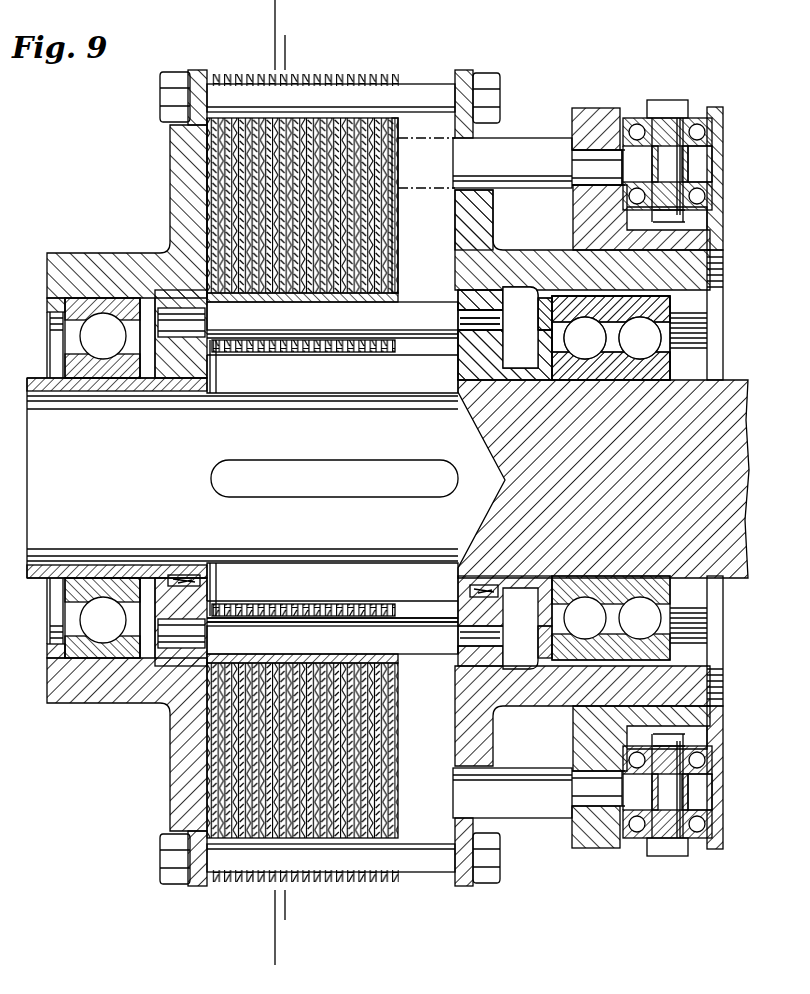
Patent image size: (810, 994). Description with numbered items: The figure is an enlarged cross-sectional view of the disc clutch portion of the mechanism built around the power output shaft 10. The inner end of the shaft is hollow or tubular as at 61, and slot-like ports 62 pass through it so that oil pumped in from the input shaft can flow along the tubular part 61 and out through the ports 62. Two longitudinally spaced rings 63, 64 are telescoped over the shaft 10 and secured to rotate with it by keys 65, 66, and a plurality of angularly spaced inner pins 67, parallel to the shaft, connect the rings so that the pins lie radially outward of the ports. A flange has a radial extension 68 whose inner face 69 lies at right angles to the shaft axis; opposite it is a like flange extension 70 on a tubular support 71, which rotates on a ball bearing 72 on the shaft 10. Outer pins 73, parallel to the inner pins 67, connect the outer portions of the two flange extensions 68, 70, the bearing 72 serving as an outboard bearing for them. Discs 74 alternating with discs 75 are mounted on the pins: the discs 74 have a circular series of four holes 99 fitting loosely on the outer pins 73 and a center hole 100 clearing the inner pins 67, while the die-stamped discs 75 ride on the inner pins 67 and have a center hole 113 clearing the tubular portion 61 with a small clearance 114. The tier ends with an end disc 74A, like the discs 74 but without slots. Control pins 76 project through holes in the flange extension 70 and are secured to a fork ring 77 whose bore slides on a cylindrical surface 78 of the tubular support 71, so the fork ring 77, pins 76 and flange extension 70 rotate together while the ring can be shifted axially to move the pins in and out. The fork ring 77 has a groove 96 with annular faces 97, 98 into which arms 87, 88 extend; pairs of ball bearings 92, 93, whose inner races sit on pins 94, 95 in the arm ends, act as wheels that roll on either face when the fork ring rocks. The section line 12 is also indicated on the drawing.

The power output shaft 10 is at (290, 21).
The section line 12 is at (298, 47).
The tubular part of the shaft 61 is at (108, 394).
The slot-like ports 62 is at (372, 468).
The ring 63 is at (152, 574).
The ring 64 is at (460, 608).
The key 65 is at (190, 574).
The key 66 is at (470, 590).
The inner pins 67 is at (332, 478).
The radial extension of flange 68 is at (170, 168).
The inner face of flange extension 69 is at (207, 187).
The flange extension 70 is at (486, 220).
The tubular support 71 is at (706, 298).
The ball bearing 72 is at (664, 365).
The outer pins 73 is at (415, 95).
The discs 74 is at (210, 215).
The end disc 74A is at (398, 165).
The discs 75 is at (215, 234).
The control pins 76 is at (523, 150).
The fork ring 77 is at (604, 110).
The cylindrical surface 78 is at (554, 254).
The arm 87 is at (700, 794).
The arm 88 is at (690, 168).
The ball bearings 92 is at (716, 758).
The ball bearings 93 is at (708, 130).
The pin 94 is at (690, 860).
The pin 95 is at (656, 100).
The groove 96 is at (700, 188).
The annular face of groove 97 is at (608, 190).
The annular face of groove 98 is at (718, 172).
The holes 99 is at (268, 84).
The center hole 100 is at (222, 300).
The center hole 113 is at (240, 350).
The clearance 114 is at (265, 354).